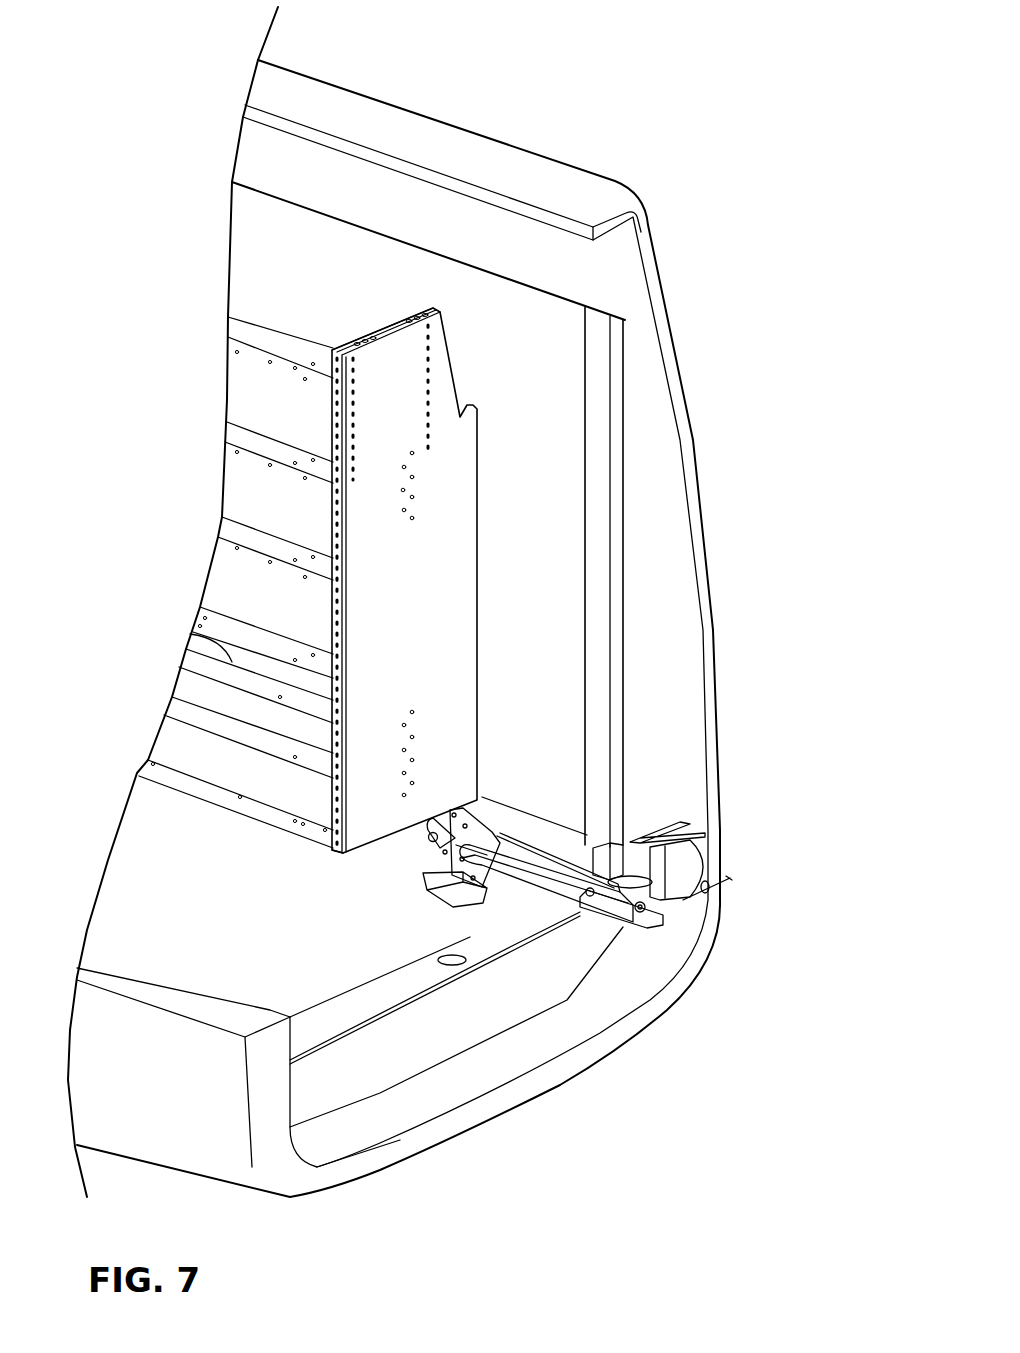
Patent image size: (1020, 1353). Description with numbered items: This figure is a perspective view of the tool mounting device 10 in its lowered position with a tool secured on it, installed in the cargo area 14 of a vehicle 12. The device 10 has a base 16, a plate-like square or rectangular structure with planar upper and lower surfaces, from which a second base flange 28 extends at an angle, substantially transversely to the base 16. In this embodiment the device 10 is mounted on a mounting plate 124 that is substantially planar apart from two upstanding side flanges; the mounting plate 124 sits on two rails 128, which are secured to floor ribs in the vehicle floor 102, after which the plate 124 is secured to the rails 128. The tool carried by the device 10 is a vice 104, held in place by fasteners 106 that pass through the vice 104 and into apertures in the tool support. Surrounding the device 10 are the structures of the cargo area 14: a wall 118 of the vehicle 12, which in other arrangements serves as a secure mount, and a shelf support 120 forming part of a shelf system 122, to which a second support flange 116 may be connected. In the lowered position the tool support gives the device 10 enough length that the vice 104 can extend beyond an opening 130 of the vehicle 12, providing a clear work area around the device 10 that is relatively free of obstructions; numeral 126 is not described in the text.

The tool mounting device 10 is at (588, 866).
The vehicle 12 is at (672, 318).
The cargo area 14 is at (558, 392).
The base 16 is at (482, 890).
The second base flange 28 is at (467, 870).
The vehicle floor 102 is at (174, 942).
The vice 104 is at (707, 863).
The fasteners 106 is at (597, 897).
The second support flange 116 is at (340, 852).
The wall 118 is at (568, 660).
The shelf support 120 is at (462, 517).
The shelf system 122 is at (371, 326).
The mounting plate 124 is at (445, 888).
The pin 126 is at (415, 873).
The rails 128 is at (510, 905).
The opening 130 is at (364, 1112).